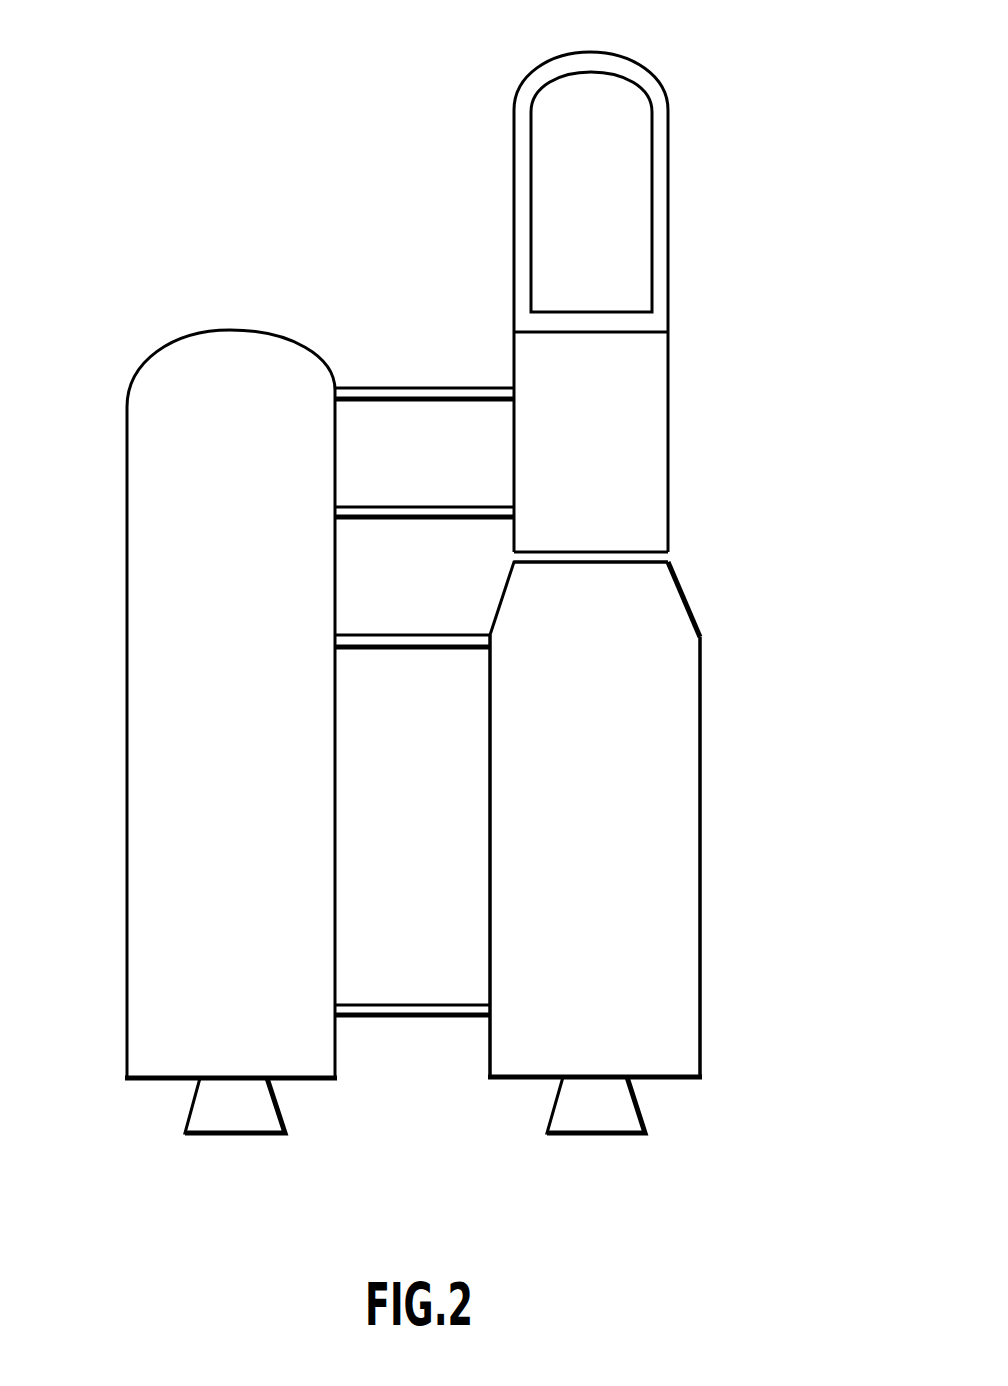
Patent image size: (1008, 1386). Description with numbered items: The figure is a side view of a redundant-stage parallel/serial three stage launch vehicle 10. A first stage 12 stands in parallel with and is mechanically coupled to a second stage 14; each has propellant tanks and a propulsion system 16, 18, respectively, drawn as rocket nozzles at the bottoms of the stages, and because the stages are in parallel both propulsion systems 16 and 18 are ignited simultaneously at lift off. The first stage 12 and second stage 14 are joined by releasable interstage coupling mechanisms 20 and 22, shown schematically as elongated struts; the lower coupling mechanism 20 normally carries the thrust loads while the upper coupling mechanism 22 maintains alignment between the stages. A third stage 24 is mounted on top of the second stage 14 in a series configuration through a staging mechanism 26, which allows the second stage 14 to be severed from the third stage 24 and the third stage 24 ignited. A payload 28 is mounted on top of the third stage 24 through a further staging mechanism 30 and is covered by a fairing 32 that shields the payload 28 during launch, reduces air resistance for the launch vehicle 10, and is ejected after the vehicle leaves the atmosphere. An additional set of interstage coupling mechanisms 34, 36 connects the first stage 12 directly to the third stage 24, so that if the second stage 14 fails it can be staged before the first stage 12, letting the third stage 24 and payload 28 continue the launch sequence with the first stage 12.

The multistage launch vehicle 10 is at (780, 674).
The first stage 12 is at (126, 518).
The second stage 14 is at (701, 873).
The propulsion system 16 is at (192, 1108).
The propulsion system 18 is at (647, 1123).
The lower coupling mechanism 20 is at (418, 1017).
The upper coupling mechanism 22 is at (410, 635).
The third stage 24 is at (669, 473).
The staging mechanism 26 is at (700, 540).
The payload 28 is at (652, 227).
The staging mechanism 30 is at (669, 322).
The fairing 32 is at (655, 81).
The interstage coupling mechanism 34 is at (405, 388).
The interstage coupling mechanism 36 is at (416, 507).